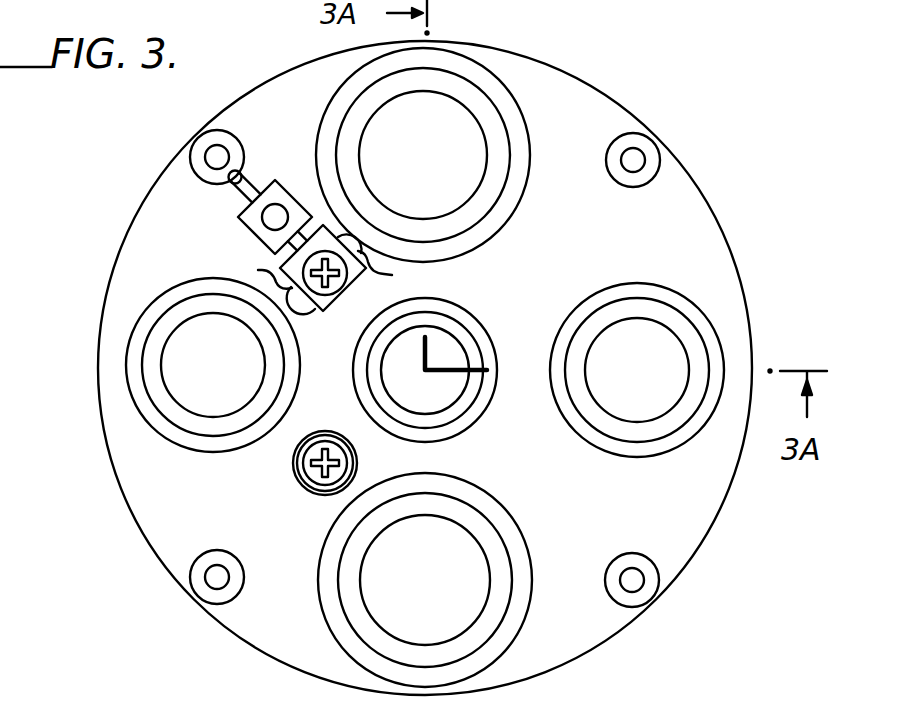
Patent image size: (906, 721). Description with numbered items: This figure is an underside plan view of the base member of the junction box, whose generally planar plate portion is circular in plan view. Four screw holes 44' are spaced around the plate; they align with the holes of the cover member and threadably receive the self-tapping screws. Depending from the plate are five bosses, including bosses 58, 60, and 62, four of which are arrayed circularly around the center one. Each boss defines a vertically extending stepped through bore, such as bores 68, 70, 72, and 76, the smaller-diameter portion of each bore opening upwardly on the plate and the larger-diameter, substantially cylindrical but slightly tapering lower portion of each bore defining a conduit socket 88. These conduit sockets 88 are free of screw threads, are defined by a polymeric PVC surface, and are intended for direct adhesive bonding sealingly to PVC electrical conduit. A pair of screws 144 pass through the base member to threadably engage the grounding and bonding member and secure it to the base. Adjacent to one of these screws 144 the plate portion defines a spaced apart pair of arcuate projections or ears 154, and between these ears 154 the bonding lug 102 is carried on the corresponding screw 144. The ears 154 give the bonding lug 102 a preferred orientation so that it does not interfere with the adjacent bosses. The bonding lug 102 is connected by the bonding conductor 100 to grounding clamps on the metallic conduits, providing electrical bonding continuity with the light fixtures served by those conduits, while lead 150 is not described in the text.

The screw holes 44' is at (422, 363).
The boss 58 is at (478, 332).
The boss 60 is at (488, 68).
The boss 62 is at (642, 452).
The stepped through bore 68 is at (452, 388).
The stepped through bore 70 is at (470, 116).
The stepped through bore 72 is at (680, 338).
The stepped through bore 76 is at (163, 353).
The conduit socket 88 is at (507, 145).
The bonding conductor 100 is at (228, 182).
The bonding lug 102 is at (252, 222).
The screws 144 is at (308, 476).
The lead wire 150 is at (269, 285).
The arcuate projections or ears 154 is at (390, 266).